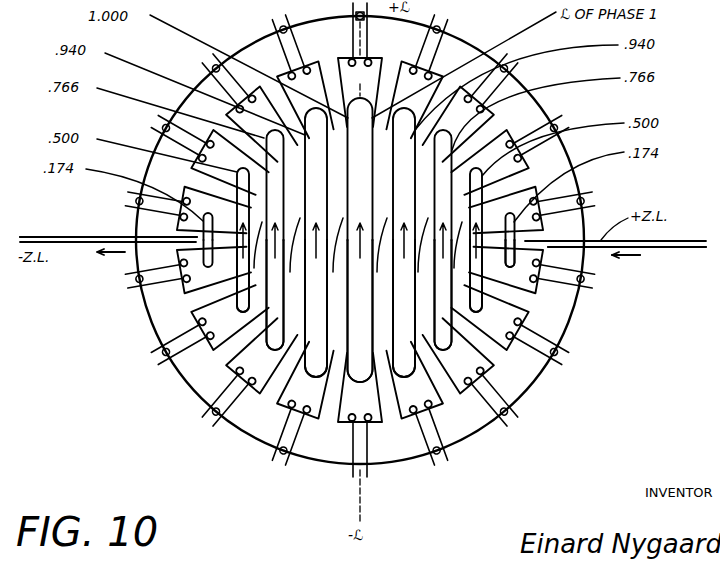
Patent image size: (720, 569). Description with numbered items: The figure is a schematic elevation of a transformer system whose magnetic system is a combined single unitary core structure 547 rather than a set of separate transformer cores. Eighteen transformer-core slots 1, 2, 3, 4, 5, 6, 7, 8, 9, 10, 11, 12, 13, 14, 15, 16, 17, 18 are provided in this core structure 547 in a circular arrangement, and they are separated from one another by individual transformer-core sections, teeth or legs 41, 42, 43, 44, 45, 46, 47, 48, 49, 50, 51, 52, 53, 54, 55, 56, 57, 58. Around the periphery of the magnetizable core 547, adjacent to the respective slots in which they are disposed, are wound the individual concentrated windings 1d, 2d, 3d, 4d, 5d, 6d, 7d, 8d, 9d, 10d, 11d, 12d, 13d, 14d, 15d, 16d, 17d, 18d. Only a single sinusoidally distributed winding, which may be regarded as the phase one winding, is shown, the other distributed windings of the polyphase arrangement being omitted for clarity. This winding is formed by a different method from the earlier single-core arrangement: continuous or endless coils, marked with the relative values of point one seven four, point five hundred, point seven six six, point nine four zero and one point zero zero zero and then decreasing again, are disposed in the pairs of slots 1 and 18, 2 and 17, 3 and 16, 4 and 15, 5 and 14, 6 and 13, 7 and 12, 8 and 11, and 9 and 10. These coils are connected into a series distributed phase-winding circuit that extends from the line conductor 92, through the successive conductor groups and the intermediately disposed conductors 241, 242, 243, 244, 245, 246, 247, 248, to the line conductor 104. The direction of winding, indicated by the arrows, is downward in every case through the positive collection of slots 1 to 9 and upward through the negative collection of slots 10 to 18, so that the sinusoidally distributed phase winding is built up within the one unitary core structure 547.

The transformer-core slot 1 is at (505, 214).
The transformer-core slot 2 is at (488, 166).
The transformer-core slot 3 is at (455, 126).
The transformer-core slot 4 is at (410, 101).
The transformer-core slot 5 is at (360, 92).
The transformer-core slot 6 is at (309, 101).
The transformer-core slot 7 is at (265, 126).
The transformer-core slot 8 is at (232, 166).
The transformer-core slot 9 is at (215, 214).
The transformer-core slot 10 is at (215, 265).
The transformer-core slot 11 is at (232, 313).
The transformer-core slot 12 is at (265, 352).
The transformer-core slot 13 is at (309, 379).
The transformer-core slot 14 is at (360, 387).
The transformer-core slot 15 is at (410, 379).
The transformer-core slot 16 is at (455, 352).
The transformer-core slot 17 is at (488, 313).
The transformer-core slot 18 is at (505, 265).
The concentrated winding 1d is at (570, 203).
The concentrated winding 2d is at (546, 133).
The concentrated winding 3d is at (495, 77).
The concentrated winding 4d is at (432, 38).
The concentrated winding 5d is at (355, 29).
The concentrated winding 6d is at (283, 37).
The concentrated winding 7d is at (217, 77).
The concentrated winding 8d is at (167, 134).
The concentrated winding 9d is at (141, 203).
The concentrated winding 10d is at (142, 281).
The concentrated winding 11d is at (167, 351).
The concentrated winding 12d is at (220, 409).
The concentrated winding 13d is at (284, 446).
The concentrated winding 14d is at (361, 255).
The concentrated winding 15d is at (438, 446).
The concentrated winding 16d is at (504, 409).
The concentrated winding 17d is at (554, 349).
The concentrated winding 18d is at (576, 281).
The transformer-core section 41 is at (532, 238).
The transformer-core section 42 is at (486, 210).
The transformer-core section 43 is at (455, 150).
The transformer-core section 44 is at (412, 112).
The transformer-core section 45 is at (373, 153).
The transformer-core section 46 is at (322, 106).
The transformer-core section 47 is at (281, 128).
The transformer-core section 48 is at (240, 112).
The transformer-core section 49 is at (208, 214).
The transformer-core section 50 is at (204, 255).
The transformer-core section 51 is at (240, 292).
The transformer-core section 52 is at (272, 343).
The transformer-core section 53 is at (312, 372).
The transformer-core section 54 is at (342, 302).
The transformer-core section 55 is at (387, 300).
The transformer-core section 56 is at (442, 346).
The transformer-core section 57 is at (478, 310).
The transformer-core section 58 is at (514, 266).
The line conductor 92 is at (600, 247).
The line conductor 104 is at (165, 236).
The intermediately disposed conductor 241 is at (545, 335).
The intermediately disposed conductor 242 is at (520, 385).
The intermediately disposed conductor 243 is at (407, 300).
The intermediately disposed conductor 244 is at (380, 300).
The intermediately disposed conductor 245 is at (357, 300).
The intermediately disposed conductor 246 is at (295, 325).
The intermediately disposed conductor 247 is at (250, 325).
The intermediately disposed conductor 248 is at (236, 262).
The unitary core structure 547 is at (560, 297).